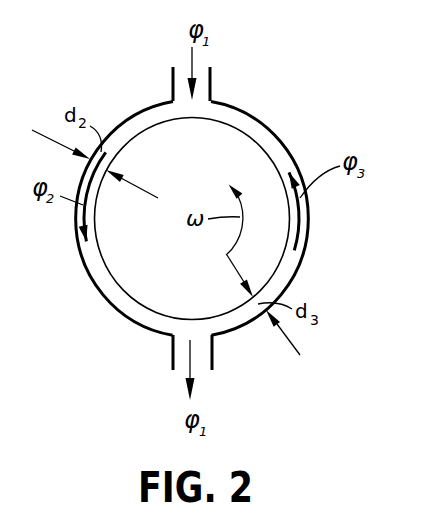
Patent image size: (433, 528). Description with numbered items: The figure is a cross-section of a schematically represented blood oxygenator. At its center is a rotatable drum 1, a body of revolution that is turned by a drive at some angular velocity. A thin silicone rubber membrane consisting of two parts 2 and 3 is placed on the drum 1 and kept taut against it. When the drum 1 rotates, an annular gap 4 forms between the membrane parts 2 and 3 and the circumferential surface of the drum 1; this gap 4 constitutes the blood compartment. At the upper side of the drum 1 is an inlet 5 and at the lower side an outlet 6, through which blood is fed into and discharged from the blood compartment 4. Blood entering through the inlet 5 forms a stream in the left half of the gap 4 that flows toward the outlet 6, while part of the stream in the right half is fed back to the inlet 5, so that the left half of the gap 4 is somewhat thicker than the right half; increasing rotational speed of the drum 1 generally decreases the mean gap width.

The drum 1 is at (237, 143).
The membrane part 2 is at (86, 271).
The membrane part 3 is at (302, 267).
The annular gap 4 is at (275, 140).
The inlet 5 is at (175, 77).
The outlet 6 is at (179, 352).